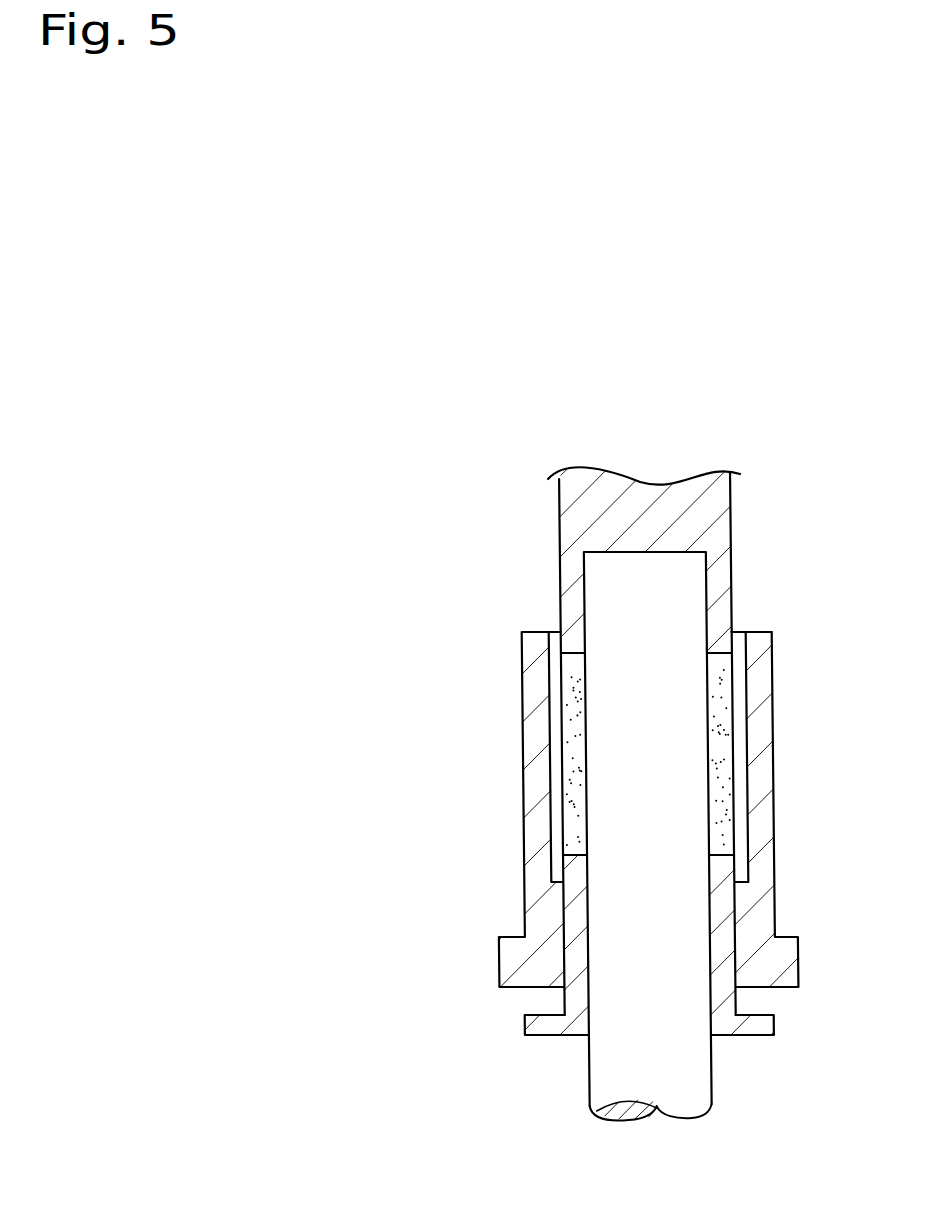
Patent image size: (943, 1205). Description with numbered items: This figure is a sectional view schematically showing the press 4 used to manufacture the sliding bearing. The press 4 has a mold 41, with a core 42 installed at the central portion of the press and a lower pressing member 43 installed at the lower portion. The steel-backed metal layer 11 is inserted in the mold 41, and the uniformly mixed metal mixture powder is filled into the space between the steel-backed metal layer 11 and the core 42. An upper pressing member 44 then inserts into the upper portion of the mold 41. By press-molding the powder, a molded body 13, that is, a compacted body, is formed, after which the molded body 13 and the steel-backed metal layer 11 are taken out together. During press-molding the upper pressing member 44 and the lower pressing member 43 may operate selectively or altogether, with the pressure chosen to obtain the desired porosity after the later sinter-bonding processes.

The press 4 is at (506, 799).
The steel-backed metal layer 11 is at (740, 650).
The molded body 13 is at (572, 685).
The mold 41 is at (768, 736).
The core 42 is at (597, 1063).
The lower pressing member 43 is at (742, 1032).
The upper pressing member 44 is at (717, 516).